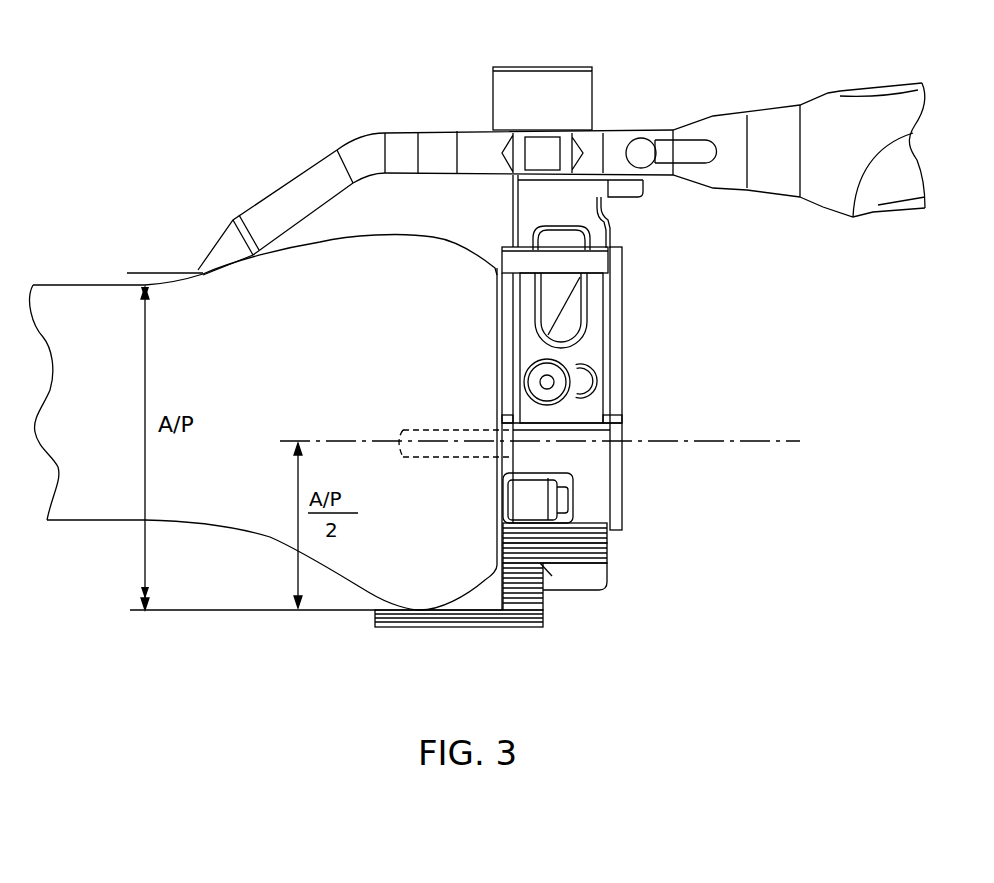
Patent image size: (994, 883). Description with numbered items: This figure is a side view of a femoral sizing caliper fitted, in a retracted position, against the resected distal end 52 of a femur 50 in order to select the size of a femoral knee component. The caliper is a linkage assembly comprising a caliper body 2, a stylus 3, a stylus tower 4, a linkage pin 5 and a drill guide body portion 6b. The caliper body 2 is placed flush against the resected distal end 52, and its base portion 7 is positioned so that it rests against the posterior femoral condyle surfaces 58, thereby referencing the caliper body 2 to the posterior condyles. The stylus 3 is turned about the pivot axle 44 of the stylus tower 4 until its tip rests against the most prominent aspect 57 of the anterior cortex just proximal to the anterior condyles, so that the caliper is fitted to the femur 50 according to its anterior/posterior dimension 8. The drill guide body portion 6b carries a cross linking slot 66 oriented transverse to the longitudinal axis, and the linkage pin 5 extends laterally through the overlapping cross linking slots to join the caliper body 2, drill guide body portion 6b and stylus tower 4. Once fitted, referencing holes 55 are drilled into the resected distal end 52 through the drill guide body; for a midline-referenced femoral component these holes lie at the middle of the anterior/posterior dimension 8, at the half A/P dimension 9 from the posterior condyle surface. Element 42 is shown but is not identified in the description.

The caliper body 2 is at (592, 470).
The stylus 3 is at (360, 135).
The stylus tower 4 is at (567, 210).
The linkage pin 5 is at (550, 397).
The drill guide body portion 6b is at (588, 348).
The base portion 7 is at (503, 630).
The anterior/posterior (A/P) dimension 8 is at (145, 419).
The (A/P)/2 dimension 9 is at (297, 517).
The actuator block 42 is at (515, 80).
The pivot axle 44 is at (543, 152).
The femur 50 is at (323, 283).
The resected distal end 52 is at (495, 348).
The referencing holes 55 is at (420, 430).
The most prominent aspect of the anterior cortex 57 is at (204, 280).
The posterior femoral condyle surfaces 58 is at (424, 607).
The cross linking slot 66 is at (583, 383).